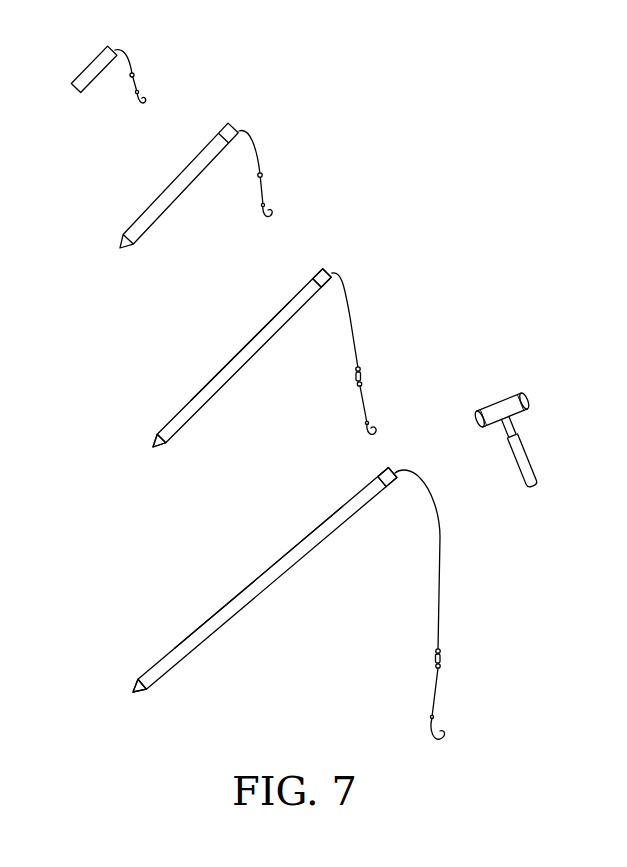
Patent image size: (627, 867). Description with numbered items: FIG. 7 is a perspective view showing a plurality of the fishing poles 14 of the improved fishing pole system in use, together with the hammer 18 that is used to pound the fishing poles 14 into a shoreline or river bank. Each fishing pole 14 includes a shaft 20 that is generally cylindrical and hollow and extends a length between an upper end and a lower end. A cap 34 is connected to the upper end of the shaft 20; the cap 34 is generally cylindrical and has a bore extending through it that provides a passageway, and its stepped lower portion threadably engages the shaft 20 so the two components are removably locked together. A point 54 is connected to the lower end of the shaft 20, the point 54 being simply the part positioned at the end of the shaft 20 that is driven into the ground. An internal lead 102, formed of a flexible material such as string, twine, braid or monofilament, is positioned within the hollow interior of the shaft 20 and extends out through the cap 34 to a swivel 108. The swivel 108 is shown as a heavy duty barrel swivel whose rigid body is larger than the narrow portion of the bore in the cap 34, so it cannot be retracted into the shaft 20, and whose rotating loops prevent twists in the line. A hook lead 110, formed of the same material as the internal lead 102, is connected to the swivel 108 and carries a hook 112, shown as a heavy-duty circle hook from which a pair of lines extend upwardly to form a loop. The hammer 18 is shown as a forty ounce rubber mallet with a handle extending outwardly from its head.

The fishing pole 14 is at (77, 57).
The hammer 18 is at (532, 396).
The shaft 20 is at (265, 332).
The cap 34 is at (320, 277).
The point 54 is at (157, 436).
The internal lead 102 is at (352, 318).
The swivel 108 is at (363, 378).
The hook lead 110 is at (372, 398).
The hook 112 is at (372, 438).